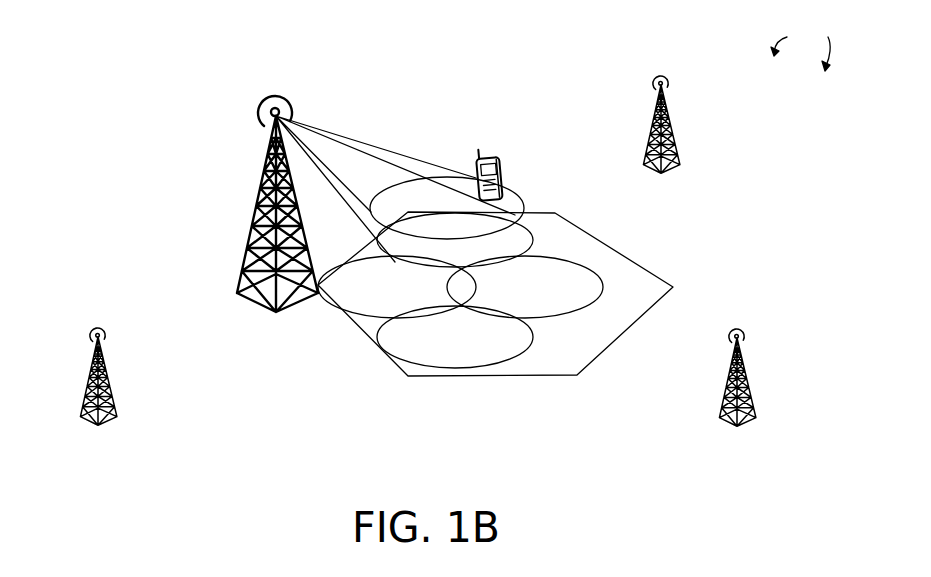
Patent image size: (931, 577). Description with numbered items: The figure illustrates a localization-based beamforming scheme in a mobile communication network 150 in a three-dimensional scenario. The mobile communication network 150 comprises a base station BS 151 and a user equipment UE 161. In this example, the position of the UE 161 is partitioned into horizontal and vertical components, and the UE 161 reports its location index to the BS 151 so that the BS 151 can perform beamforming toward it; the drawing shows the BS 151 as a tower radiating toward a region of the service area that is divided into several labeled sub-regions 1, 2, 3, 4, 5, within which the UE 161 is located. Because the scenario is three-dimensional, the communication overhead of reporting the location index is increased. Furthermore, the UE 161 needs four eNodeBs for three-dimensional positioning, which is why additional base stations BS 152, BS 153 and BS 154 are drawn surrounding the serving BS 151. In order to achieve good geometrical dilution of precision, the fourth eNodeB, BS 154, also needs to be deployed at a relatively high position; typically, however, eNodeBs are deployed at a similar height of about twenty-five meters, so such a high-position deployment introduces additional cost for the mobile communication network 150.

The mobile communication network 150 is at (800, 44).
The BS 151 is at (276, 313).
The BS 152 is at (98, 424).
The BS 153 is at (737, 425).
The BS 154 is at (661, 175).
The UE 161 is at (483, 151).
The cell 1 is at (455, 240).
The cell 2 is at (397, 287).
The cell 3 is at (455, 337).
The cell 4 is at (525, 287).
The cell 5 is at (447, 208).